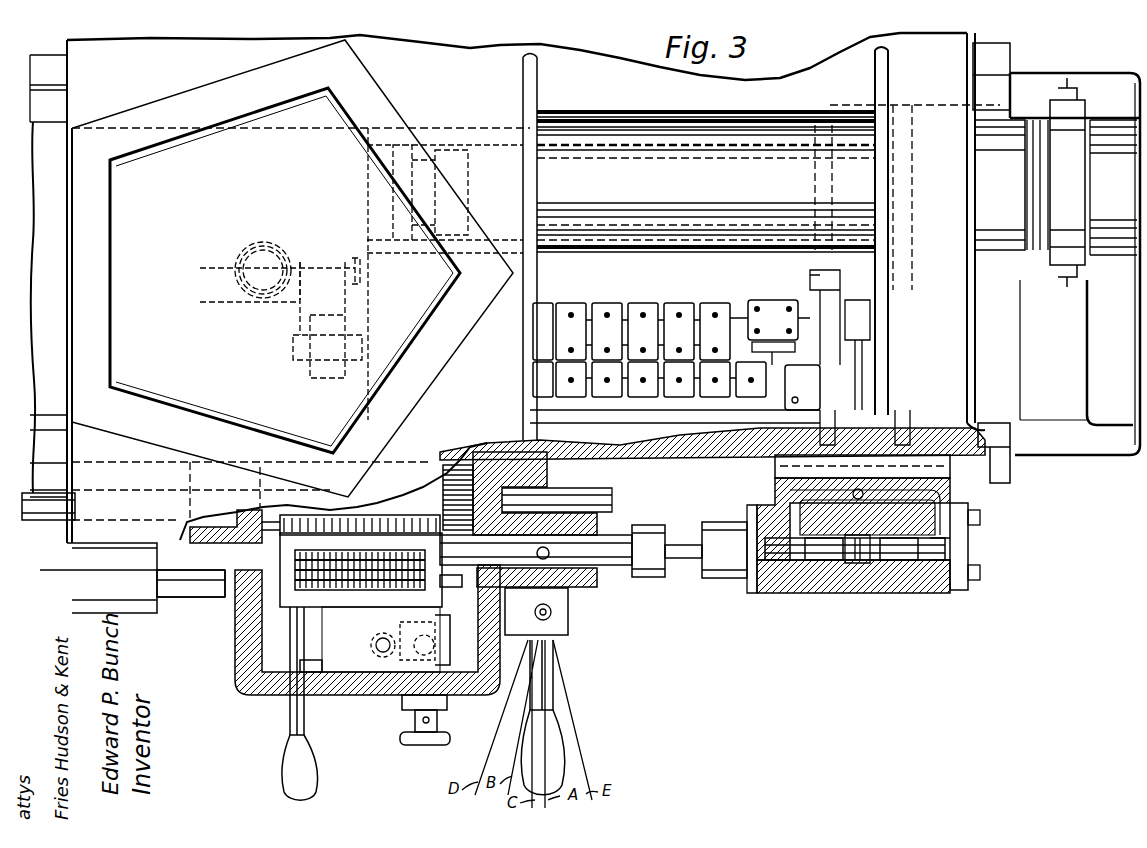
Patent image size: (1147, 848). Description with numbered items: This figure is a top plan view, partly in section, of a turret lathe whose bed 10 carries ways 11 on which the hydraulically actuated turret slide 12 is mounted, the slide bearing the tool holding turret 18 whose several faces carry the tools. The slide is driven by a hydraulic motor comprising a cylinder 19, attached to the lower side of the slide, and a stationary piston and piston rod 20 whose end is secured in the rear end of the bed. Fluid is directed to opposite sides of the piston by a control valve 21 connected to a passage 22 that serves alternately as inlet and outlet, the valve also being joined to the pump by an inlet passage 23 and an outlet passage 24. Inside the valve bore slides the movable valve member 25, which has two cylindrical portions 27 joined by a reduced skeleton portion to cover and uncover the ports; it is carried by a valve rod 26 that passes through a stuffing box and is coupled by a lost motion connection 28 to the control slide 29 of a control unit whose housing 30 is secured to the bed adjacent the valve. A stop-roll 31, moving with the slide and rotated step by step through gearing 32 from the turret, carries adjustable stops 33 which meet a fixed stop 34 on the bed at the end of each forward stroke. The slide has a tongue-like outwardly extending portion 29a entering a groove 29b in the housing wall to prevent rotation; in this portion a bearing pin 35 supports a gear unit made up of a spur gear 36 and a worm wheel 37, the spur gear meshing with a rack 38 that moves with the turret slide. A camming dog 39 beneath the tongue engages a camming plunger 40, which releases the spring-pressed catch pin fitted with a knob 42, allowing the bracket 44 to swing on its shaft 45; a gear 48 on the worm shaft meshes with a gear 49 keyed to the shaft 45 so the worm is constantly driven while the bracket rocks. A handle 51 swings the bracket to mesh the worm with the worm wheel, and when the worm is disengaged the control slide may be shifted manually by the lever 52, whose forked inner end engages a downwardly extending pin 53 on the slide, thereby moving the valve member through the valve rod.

The bed 10 is at (1060, 80).
The ways 11 is at (1003, 62).
The turret slide 12 is at (592, 62).
The tool holding turret 18 is at (382, 100).
The cylinder 19 is at (495, 125).
The piston and piston rod 20 is at (470, 178).
The control valve 21 is at (895, 590).
The passage 22 is at (862, 466).
The inlet passage 23 is at (847, 590).
The outlet passage 24 is at (853, 494).
The movable valve member 25 is at (938, 548).
The valve rod 26 is at (686, 565).
The cylindrical portions 27 is at (861, 549).
The lost motion connection 28 is at (652, 525).
The control slide 29 is at (608, 527).
The outwardly extending portion 29a is at (345, 662).
The groove 29b is at (310, 674).
The housing 30 is at (240, 635).
The stop-roll 31 is at (645, 308).
The gearing 32 is at (305, 315).
The stops 33 is at (766, 300).
The fixed stop 34 is at (285, 300).
The bearing pin 35 is at (352, 497).
The spur gear 36 is at (390, 590).
The worm wheel 37 is at (351, 515).
The rack 38 is at (183, 600).
The camming dog 39 is at (375, 645).
The camming plunger 40 is at (450, 645).
The knob 42 is at (422, 746).
The bracket 44 is at (432, 493).
The shaft 45 is at (55, 522).
The gear 48 is at (454, 588).
The gear 49 is at (448, 468).
The handle 51 is at (287, 770).
The lever 52 is at (560, 737).
The pin 53 is at (550, 553).